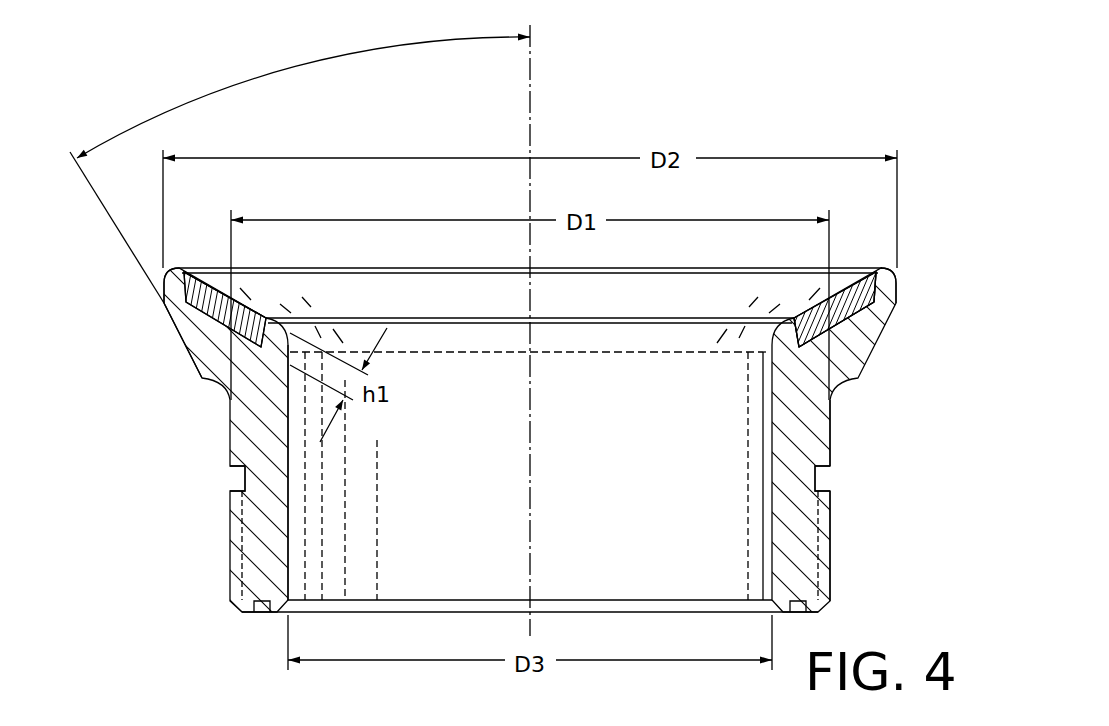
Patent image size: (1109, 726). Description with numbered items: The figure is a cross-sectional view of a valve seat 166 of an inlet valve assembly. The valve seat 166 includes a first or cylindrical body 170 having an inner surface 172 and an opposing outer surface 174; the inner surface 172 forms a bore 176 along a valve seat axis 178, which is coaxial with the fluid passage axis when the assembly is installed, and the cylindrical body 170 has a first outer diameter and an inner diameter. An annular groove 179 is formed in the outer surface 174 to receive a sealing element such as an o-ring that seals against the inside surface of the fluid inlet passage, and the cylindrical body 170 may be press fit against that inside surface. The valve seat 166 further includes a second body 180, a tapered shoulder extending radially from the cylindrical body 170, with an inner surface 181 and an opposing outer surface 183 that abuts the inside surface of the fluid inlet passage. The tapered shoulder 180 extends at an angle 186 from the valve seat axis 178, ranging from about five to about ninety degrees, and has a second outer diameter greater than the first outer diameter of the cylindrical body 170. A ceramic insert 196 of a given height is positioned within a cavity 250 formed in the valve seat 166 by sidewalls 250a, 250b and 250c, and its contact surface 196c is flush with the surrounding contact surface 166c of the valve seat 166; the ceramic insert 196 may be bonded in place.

The valve seat 166 is at (512, 268).
The contact surface of the valve seat 166c is at (184, 268).
The cylindrical body 170 is at (231, 545).
The inner surface 172 is at (288, 537).
The outer surface 174 is at (831, 558).
The bore 176 is at (288, 475).
The valve seat axis 178 is at (533, 470).
The annular groove 179 is at (245, 478).
The second body 180 is at (162, 320).
The inner surface of the second body 181 is at (857, 270).
The outer surface of the second body 183 is at (190, 360).
The angle 186 is at (299, 75).
The ceramic insert 196 is at (253, 306).
The contact surface of the ceramic insert 196c is at (236, 297).
The cavity 250 is at (870, 338).
The sidewall 250a is at (880, 298).
The sidewall 250b is at (778, 338).
The sidewall 250c is at (848, 331).